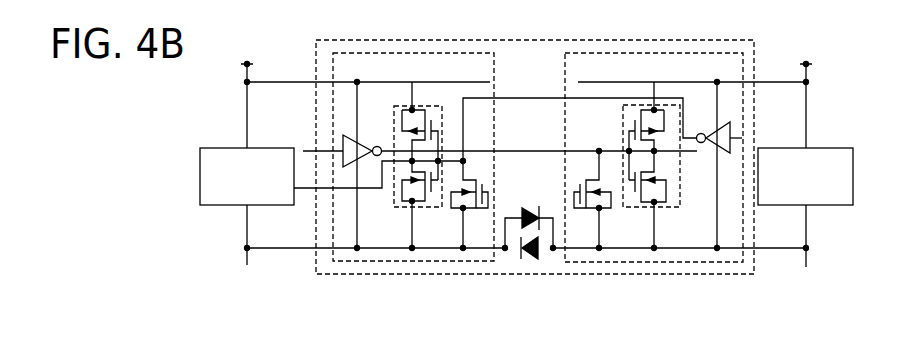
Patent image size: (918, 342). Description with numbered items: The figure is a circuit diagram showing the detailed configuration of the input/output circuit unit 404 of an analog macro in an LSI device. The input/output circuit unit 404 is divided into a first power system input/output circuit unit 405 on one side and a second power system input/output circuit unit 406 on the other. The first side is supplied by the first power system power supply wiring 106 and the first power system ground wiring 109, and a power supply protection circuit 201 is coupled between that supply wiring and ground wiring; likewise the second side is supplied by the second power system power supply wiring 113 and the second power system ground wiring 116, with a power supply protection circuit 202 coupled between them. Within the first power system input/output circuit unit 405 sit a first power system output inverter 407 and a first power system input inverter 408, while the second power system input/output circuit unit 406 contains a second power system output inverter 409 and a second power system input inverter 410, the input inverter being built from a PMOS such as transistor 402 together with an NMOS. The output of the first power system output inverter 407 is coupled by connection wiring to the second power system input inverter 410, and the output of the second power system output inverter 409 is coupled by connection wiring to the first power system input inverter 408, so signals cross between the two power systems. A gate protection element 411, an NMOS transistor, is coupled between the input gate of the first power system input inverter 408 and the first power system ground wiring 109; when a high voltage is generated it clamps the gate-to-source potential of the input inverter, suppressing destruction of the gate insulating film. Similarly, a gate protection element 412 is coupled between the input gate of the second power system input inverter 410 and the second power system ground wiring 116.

The first power system power supply wiring 106 is at (286, 82).
The first power system ground wiring 109 is at (280, 248).
The second power system power supply wiring 113 is at (769, 82).
The second power system ground wiring 116 is at (758, 248).
The power supply protection circuit 201 is at (227, 147).
The power supply protection circuit 202 is at (826, 148).
The P-channel transistor 402 is at (670, 105).
The input/output circuit unit of the analog macro 404 is at (540, 24).
The first power system input/output circuit unit 405 is at (450, 53).
The second power system input/output circuit unit 406 is at (670, 262).
The first power system output inverter 407 is at (340, 146).
The first power system input inverter 408 is at (400, 104).
The second power system output inverter 409 is at (725, 121).
The second power system input inverter 410 is at (655, 128).
The gate protection element 411 is at (472, 170).
The gate protection element 412 is at (587, 178).